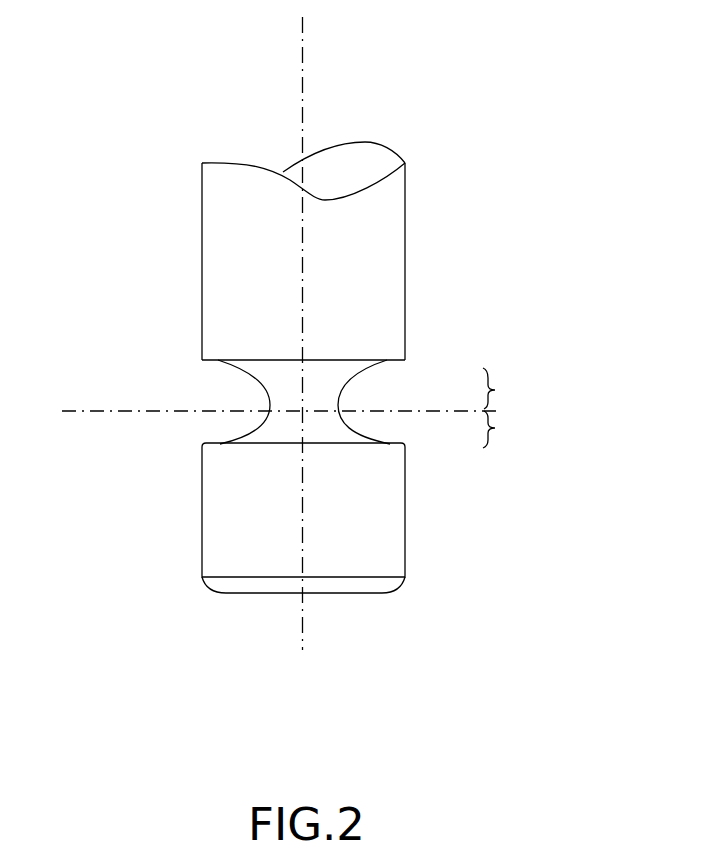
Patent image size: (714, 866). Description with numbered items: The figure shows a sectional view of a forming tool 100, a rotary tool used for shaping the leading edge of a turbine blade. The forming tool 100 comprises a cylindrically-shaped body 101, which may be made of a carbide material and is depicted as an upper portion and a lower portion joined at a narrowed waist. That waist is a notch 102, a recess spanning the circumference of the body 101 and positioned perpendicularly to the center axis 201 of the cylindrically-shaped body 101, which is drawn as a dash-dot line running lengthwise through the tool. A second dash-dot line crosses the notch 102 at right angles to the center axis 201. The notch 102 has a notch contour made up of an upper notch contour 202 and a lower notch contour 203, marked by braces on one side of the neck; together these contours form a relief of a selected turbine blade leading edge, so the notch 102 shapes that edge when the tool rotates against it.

The forming tool 100 is at (78, 126).
The cylindrically-shaped body 101 is at (423, 228).
The notch 102 is at (200, 432).
The center axis 201 is at (320, 65).
The upper notch contour 202 is at (516, 388).
The lower notch contour 203 is at (516, 429).